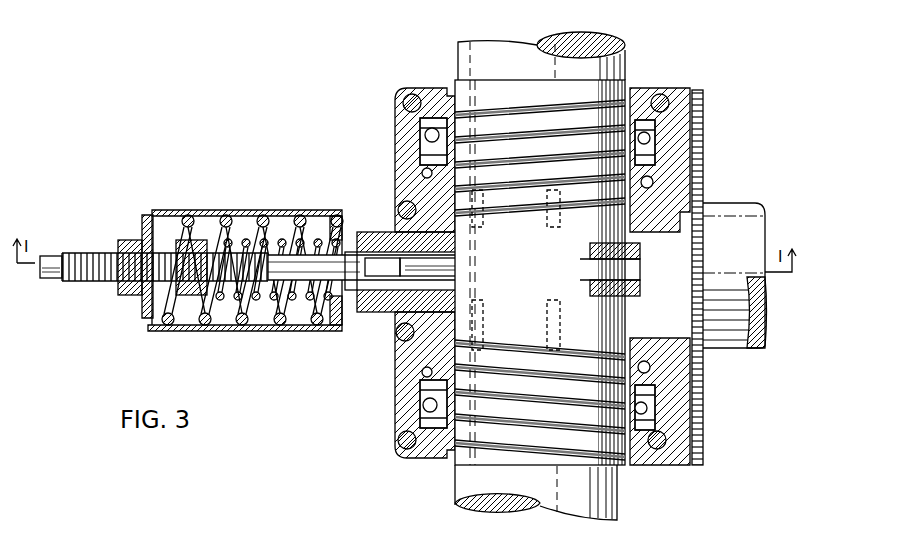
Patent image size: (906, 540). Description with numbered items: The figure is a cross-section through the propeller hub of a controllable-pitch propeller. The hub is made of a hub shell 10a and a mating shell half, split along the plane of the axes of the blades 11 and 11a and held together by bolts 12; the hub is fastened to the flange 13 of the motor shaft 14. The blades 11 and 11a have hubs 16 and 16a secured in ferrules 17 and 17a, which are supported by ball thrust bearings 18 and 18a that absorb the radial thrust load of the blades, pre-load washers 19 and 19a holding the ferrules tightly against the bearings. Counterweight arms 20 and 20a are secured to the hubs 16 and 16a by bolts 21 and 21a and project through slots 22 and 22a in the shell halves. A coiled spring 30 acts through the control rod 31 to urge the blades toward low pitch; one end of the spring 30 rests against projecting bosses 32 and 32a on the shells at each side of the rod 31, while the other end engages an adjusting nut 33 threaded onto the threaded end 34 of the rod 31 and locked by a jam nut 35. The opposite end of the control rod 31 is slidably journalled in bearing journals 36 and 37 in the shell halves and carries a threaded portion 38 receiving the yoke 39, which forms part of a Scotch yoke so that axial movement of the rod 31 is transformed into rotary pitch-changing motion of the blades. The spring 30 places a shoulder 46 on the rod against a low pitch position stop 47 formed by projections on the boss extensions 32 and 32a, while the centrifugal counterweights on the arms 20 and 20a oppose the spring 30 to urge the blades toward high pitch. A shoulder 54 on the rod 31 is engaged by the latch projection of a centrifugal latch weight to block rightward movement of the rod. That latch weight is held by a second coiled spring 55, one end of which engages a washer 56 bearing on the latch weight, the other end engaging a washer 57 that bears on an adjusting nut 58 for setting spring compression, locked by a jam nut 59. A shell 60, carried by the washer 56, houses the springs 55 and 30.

The hub shell 10a is at (442, 458).
The propeller blade 11 is at (566, 498).
The propeller blade 11a is at (500, 55).
The bolt 12 is at (412, 92).
The flange 13 is at (700, 92).
The motor shaft 14 is at (718, 210).
The hub 16 is at (425, 137).
The hub 16a is at (510, 400).
The ferrule 17 is at (652, 148).
The ferrule 17a is at (648, 382).
The ball thrust bearing 18 is at (660, 132).
The ball thrust bearing 18a is at (650, 412).
The pre-load washer 19 is at (660, 205).
The pre-load washer 19a is at (655, 352).
The counterweight arm 20 is at (380, 233).
The counterweight arm 20a is at (375, 313).
The bolt 21 is at (546, 195).
The bolt 21a is at (546, 325).
The slot 22 is at (394, 205).
The slot 22a is at (412, 380).
The coiled spring 30 is at (248, 240).
The control rod 31 is at (296, 281).
The projecting boss 32 is at (343, 238).
The projecting boss 32a is at (300, 327).
The adjusting nut 33 is at (195, 297).
The threaded end 34 is at (97, 282).
The jam nut 35 is at (182, 240).
The bearing journal 36 is at (423, 406).
The bearing journal 37 is at (612, 292).
The threaded portion 38 is at (605, 248).
The yoke 39 is at (560, 284).
The shoulder 46 is at (490, 267).
The low pitch position stop 47 is at (382, 267).
The shoulder 54 is at (358, 290).
The coiled spring 55 is at (262, 226).
The washer 56 is at (338, 232).
The washer 57 is at (147, 222).
The adjusting nut 58 is at (128, 240).
The jam nut 59 is at (119, 296).
The shell 60 is at (200, 211).